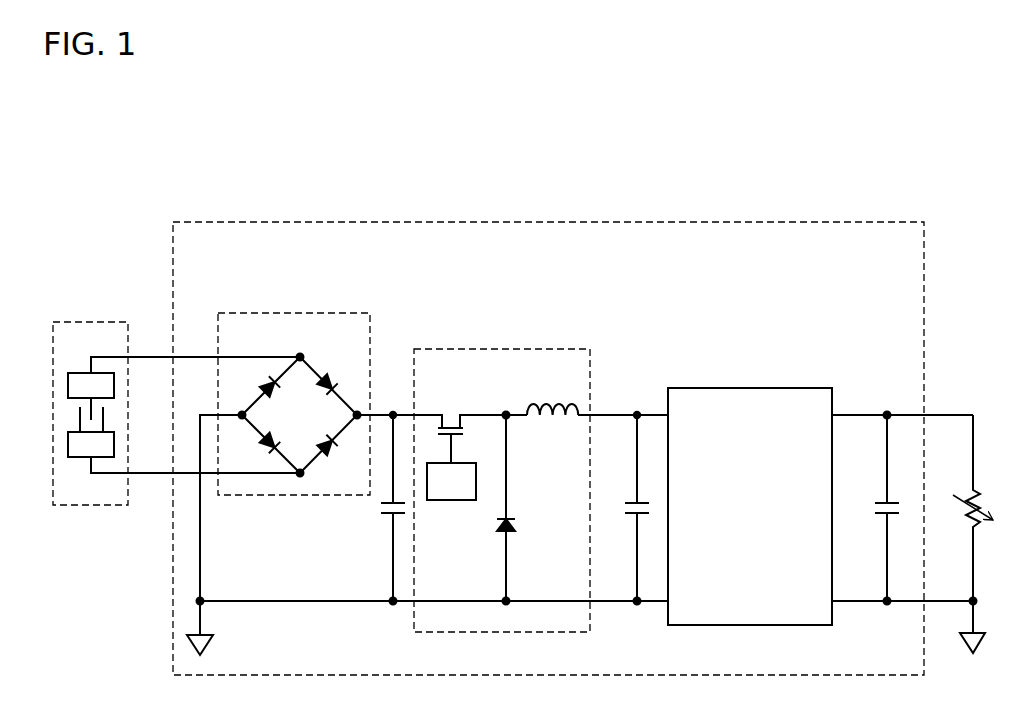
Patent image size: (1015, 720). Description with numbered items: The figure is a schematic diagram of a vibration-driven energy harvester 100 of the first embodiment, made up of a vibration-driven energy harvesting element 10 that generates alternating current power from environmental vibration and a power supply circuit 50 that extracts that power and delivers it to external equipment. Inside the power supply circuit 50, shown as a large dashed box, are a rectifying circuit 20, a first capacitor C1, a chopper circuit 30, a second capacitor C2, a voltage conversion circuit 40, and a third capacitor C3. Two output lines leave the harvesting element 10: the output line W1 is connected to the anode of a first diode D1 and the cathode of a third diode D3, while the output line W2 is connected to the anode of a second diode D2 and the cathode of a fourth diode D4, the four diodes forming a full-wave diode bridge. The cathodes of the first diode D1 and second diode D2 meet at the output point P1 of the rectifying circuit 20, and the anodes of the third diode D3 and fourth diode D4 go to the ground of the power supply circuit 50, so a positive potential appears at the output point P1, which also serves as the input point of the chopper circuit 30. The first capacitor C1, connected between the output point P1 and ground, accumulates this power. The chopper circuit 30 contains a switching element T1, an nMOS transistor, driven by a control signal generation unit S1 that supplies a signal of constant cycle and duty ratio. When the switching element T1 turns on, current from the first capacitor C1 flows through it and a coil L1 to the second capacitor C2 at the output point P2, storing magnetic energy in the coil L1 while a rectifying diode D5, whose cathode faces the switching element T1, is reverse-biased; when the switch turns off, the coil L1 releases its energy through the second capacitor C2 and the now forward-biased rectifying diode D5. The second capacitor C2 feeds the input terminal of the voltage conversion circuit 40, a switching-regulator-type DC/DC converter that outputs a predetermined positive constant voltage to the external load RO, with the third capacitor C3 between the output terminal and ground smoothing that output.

The vibration-driven energy harvester 100 is at (303, 148).
The vibration-driven energy harvesting element 10 is at (87, 320).
The rectifying circuit 20 is at (293, 312).
The chopper circuit 30 is at (487, 348).
The voltage conversion circuit 40 is at (738, 387).
The power supply circuit 50 is at (563, 220).
The output line W1 is at (195, 459).
The output line W2 is at (195, 351).
The first diode D1 is at (337, 461).
The second diode D2 is at (341, 374).
The third diode D3 is at (252, 452).
The fourth diode D4 is at (251, 383).
The rectifying diode D5 is at (488, 508).
The output point P1 is at (395, 398).
The output point P2 is at (637, 398).
The switching element T1 is at (449, 420).
The control signal generation unit S1 is at (451, 481).
The coil L1 is at (571, 394).
The first capacitor C1 is at (380, 510).
The second capacitor C2 is at (632, 510).
The third capacitor C3 is at (873, 508).
The external load RO is at (961, 534).